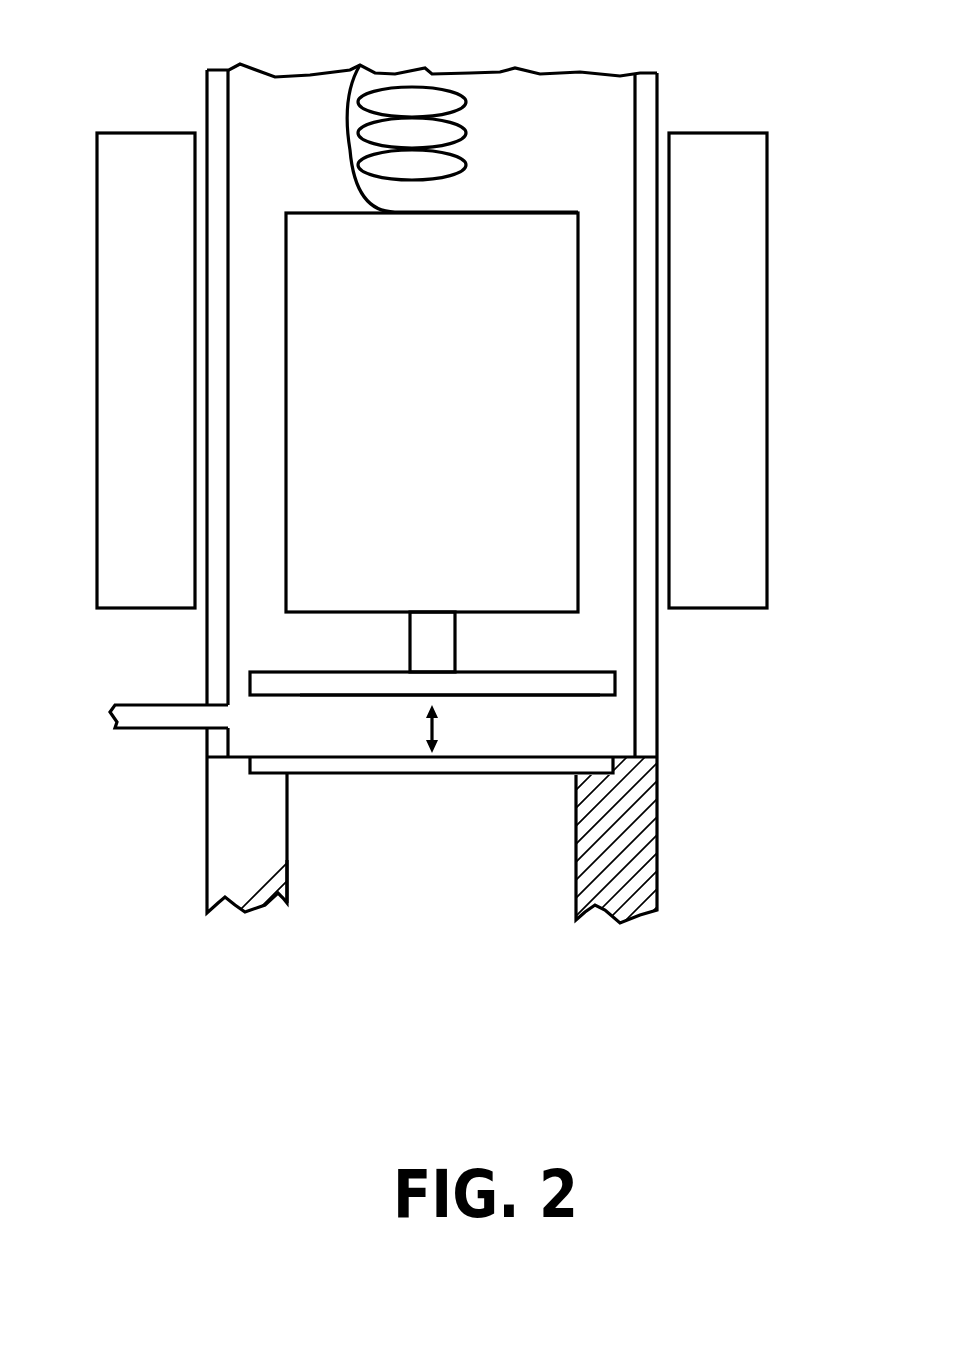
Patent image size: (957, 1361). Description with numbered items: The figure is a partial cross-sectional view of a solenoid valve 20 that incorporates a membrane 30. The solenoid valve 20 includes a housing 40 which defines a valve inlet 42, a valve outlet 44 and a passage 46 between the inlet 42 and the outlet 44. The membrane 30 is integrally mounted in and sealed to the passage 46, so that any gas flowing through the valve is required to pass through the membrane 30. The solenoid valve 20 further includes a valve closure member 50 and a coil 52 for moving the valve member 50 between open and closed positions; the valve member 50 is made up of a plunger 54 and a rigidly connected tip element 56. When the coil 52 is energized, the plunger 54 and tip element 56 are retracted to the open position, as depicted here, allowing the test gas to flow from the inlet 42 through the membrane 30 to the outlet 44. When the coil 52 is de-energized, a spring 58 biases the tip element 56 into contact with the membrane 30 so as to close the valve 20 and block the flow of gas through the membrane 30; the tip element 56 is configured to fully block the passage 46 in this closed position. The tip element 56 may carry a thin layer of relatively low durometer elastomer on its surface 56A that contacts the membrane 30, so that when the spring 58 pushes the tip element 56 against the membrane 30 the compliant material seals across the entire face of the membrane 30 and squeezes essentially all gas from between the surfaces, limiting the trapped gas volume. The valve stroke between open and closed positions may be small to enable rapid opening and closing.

The solenoid valve 20 is at (793, 412).
The membrane 30 is at (437, 777).
The housing 40 is at (516, 850).
The valve inlet 42 is at (152, 730).
The valve outlet 44 is at (457, 927).
The passage 46 is at (518, 858).
The valve closure member 50 is at (517, 385).
The coil 52 is at (108, 300).
The plunger 54 is at (315, 230).
The tip element 56 is at (617, 687).
The surface 56A is at (568, 697).
The spring 58 is at (466, 134).